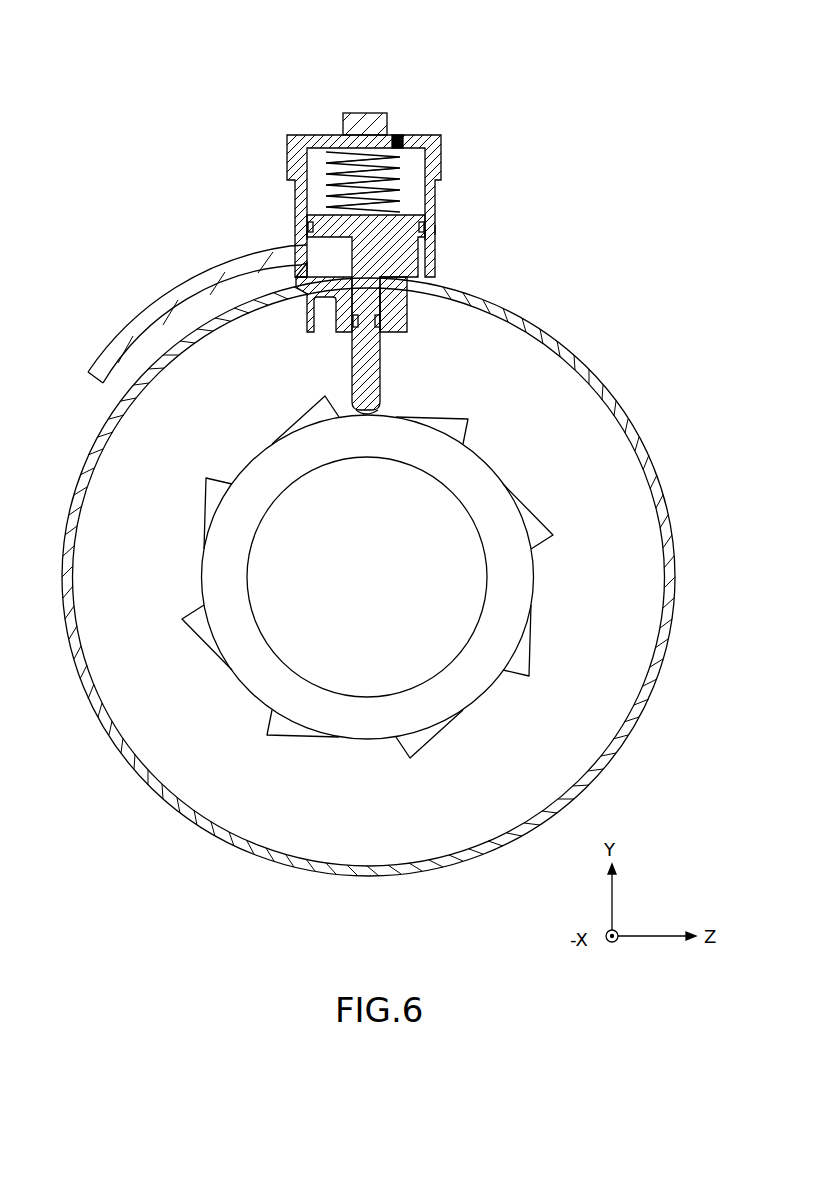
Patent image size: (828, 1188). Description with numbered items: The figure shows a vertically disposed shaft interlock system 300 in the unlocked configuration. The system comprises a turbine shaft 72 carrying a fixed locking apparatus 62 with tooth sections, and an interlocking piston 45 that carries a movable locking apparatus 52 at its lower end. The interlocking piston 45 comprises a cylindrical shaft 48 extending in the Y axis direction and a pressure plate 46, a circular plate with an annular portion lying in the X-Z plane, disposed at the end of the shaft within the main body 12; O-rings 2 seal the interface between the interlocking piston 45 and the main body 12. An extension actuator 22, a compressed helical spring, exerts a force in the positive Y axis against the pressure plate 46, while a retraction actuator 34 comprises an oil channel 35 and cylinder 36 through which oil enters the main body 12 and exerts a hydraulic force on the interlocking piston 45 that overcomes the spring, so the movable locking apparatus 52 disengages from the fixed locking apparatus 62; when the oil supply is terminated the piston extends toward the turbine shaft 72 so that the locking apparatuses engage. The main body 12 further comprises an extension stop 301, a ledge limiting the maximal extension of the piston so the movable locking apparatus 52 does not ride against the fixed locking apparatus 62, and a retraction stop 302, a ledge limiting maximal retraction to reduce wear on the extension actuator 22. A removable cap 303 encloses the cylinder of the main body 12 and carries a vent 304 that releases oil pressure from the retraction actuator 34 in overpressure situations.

The shaft interlock system 300 is at (228, 93).
The cap 303 is at (357, 113).
The vent 304 is at (399, 135).
The extension actuator 22 is at (334, 150).
The retraction stop 302 is at (360, 176).
The O-rings 2 is at (426, 224).
The extension stop 301 is at (300, 240).
The main body 12 is at (436, 232).
The oil channel 35 is at (257, 266).
The pressure plate 46 is at (402, 236).
The interlocking piston 45 is at (385, 300).
The cylindrical shaft 48 is at (382, 322).
The cylinder 36 is at (333, 253).
The retraction actuator 34 is at (114, 393).
The movable locking apparatus 52 is at (383, 412).
The fixed locking apparatus 62 is at (500, 462).
The turbine shaft 72 is at (490, 568).